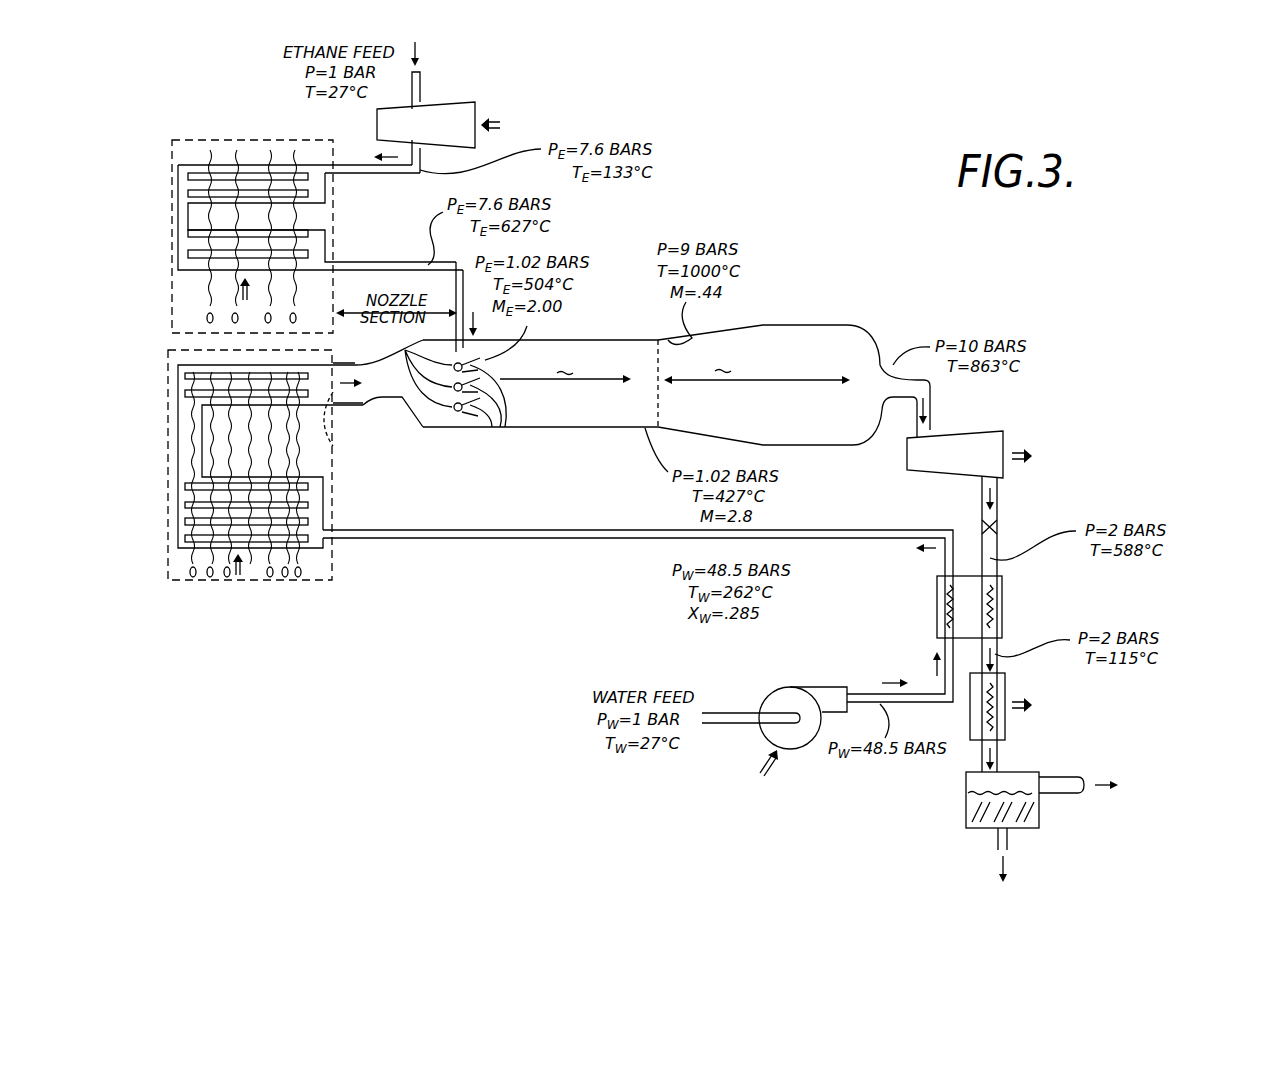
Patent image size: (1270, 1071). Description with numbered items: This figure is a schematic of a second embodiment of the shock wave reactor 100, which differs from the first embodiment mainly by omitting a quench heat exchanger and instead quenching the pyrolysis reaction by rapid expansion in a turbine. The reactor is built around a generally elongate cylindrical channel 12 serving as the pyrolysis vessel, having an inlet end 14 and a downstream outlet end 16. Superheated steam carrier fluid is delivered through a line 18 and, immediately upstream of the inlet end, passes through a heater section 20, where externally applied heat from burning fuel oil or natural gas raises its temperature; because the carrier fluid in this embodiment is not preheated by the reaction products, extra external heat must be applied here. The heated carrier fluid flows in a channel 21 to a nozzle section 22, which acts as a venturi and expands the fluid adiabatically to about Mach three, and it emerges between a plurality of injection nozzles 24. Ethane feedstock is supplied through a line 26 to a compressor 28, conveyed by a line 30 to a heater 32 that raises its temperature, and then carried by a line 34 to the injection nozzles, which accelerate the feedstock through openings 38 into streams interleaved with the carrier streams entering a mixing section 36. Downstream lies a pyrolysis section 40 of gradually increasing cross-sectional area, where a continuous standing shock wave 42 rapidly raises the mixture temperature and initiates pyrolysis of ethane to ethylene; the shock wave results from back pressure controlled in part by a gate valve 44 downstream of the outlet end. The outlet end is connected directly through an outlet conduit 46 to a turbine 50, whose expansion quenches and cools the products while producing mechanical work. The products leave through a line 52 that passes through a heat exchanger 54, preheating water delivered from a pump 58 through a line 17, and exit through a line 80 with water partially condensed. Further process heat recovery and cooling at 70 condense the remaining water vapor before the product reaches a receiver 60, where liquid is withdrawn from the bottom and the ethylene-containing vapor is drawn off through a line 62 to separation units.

The shock wave reactor 100 is at (358, 724).
The channel 12 is at (676, 390).
The inlet end 14 is at (345, 425).
The outlet end 16 is at (880, 312).
The line 17 is at (900, 670).
The line 18 is at (638, 553).
The heater section 20 is at (277, 488).
The channel 21 is at (381, 390).
The nozzle section 22 is at (359, 369).
The injection nozzles 24 is at (431, 376).
The line 26 is at (439, 122).
The compressor 28 is at (436, 125).
The line 30 is at (299, 178).
The heater 32 is at (317, 218).
The line 34 is at (424, 285).
The mixing section 36 is at (568, 363).
The openings 38 is at (490, 411).
The pyrolysis section 40 is at (725, 361).
The shock wave 42 is at (635, 323).
The gate valve 44 is at (1019, 515).
The outlet conduit 46 is at (953, 403).
The turbine 50 is at (985, 438).
The line 52 is at (963, 526).
The heat exchanger 54 is at (997, 599).
The pump 58 is at (774, 726).
The receiver 60 is at (995, 813).
The line 62 is at (1126, 785).
The process heat recovery and further cooling 70 is at (1014, 711).
The line 80 is at (1024, 655).